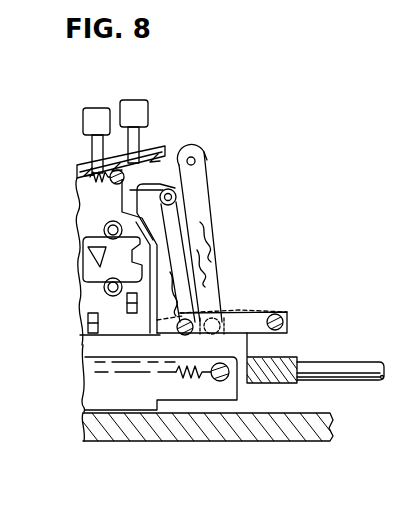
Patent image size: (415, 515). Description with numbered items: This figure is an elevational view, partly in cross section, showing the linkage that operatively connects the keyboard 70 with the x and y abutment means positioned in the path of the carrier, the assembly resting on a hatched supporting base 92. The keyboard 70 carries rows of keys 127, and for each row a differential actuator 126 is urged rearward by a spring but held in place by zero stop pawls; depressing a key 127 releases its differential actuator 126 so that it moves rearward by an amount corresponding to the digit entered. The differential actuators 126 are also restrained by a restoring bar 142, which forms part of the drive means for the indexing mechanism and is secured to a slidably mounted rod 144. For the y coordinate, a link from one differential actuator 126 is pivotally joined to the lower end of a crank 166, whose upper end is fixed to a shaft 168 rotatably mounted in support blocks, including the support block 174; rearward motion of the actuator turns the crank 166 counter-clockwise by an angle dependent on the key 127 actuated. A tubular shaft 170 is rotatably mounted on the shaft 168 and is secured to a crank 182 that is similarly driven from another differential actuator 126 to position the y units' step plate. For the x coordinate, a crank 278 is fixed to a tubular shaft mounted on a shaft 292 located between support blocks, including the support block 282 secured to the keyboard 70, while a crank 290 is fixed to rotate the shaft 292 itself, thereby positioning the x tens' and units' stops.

The keyboard 70 is at (78, 165).
The keys 127 is at (132, 100).
The support block 282 is at (170, 160).
The shaft 168 is at (173, 182).
The shaft 292 is at (200, 158).
The crank 182 is at (177, 223).
The crank 278 is at (212, 242).
The crank 290 is at (214, 282).
The support block 174 is at (140, 193).
The tubular shaft 170 is at (142, 207).
The crank 166 is at (160, 324).
The differential actuator 126 is at (90, 354).
The restoring bar 142 is at (275, 345).
The rod 144 is at (336, 381).
The base 92 is at (130, 437).